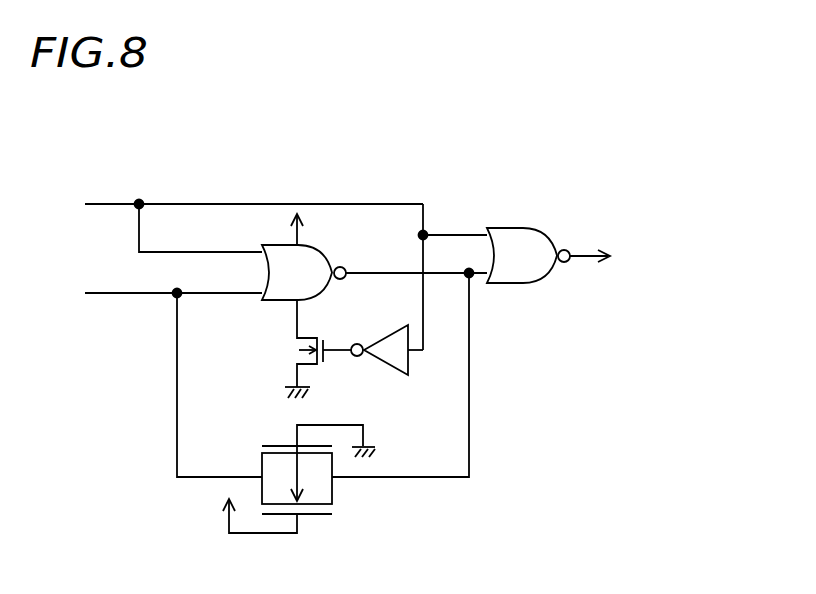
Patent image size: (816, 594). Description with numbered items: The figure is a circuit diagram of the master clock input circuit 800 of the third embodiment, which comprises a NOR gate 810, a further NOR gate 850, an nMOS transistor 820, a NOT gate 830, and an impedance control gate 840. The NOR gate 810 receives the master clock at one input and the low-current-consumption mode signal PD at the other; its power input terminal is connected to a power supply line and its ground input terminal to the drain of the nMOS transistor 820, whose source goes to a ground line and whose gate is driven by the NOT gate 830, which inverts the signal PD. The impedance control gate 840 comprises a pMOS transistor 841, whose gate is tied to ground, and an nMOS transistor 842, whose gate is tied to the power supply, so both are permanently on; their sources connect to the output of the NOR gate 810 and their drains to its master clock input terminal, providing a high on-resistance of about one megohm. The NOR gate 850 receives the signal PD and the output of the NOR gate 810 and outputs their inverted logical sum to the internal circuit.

The master clock input circuit 800 is at (645, 110).
The NOR gate 810 is at (322, 249).
The nMOS transistor 820 is at (315, 333).
The NOT gate 830 is at (389, 374).
The impedance control gate 840 is at (421, 505).
The pMOS transistor 841 is at (333, 462).
The nMOS transistor 842 is at (333, 497).
The NOR gate 850 is at (521, 228).